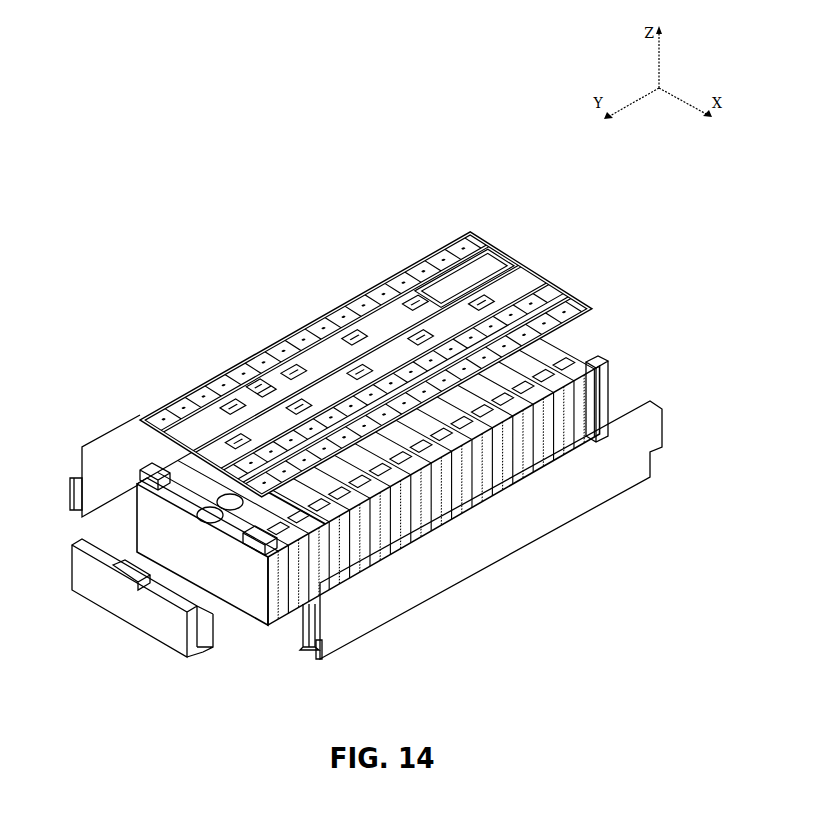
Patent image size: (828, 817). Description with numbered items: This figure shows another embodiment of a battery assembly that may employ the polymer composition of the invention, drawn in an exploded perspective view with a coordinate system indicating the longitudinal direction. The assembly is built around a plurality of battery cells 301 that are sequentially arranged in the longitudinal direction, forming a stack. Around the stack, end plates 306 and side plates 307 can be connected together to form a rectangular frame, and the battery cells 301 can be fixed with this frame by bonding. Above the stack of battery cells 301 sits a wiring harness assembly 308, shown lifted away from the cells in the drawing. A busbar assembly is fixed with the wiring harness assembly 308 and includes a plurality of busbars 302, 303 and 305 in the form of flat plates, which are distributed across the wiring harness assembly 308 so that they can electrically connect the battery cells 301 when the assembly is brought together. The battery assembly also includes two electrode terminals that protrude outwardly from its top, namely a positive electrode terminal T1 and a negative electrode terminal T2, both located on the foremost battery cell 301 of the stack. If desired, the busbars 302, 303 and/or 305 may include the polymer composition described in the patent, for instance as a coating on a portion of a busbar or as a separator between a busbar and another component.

The battery cells 301 is at (252, 612).
The busbar 302 is at (253, 383).
The busbar 303 is at (318, 313).
The busbar 305 is at (508, 265).
The end plates 306 is at (147, 622).
The side plates 307 is at (97, 440).
The wiring harness assembly 308 is at (370, 282).
The positive electrode terminal T1 is at (156, 488).
The negative electrode terminal T2 is at (253, 552).